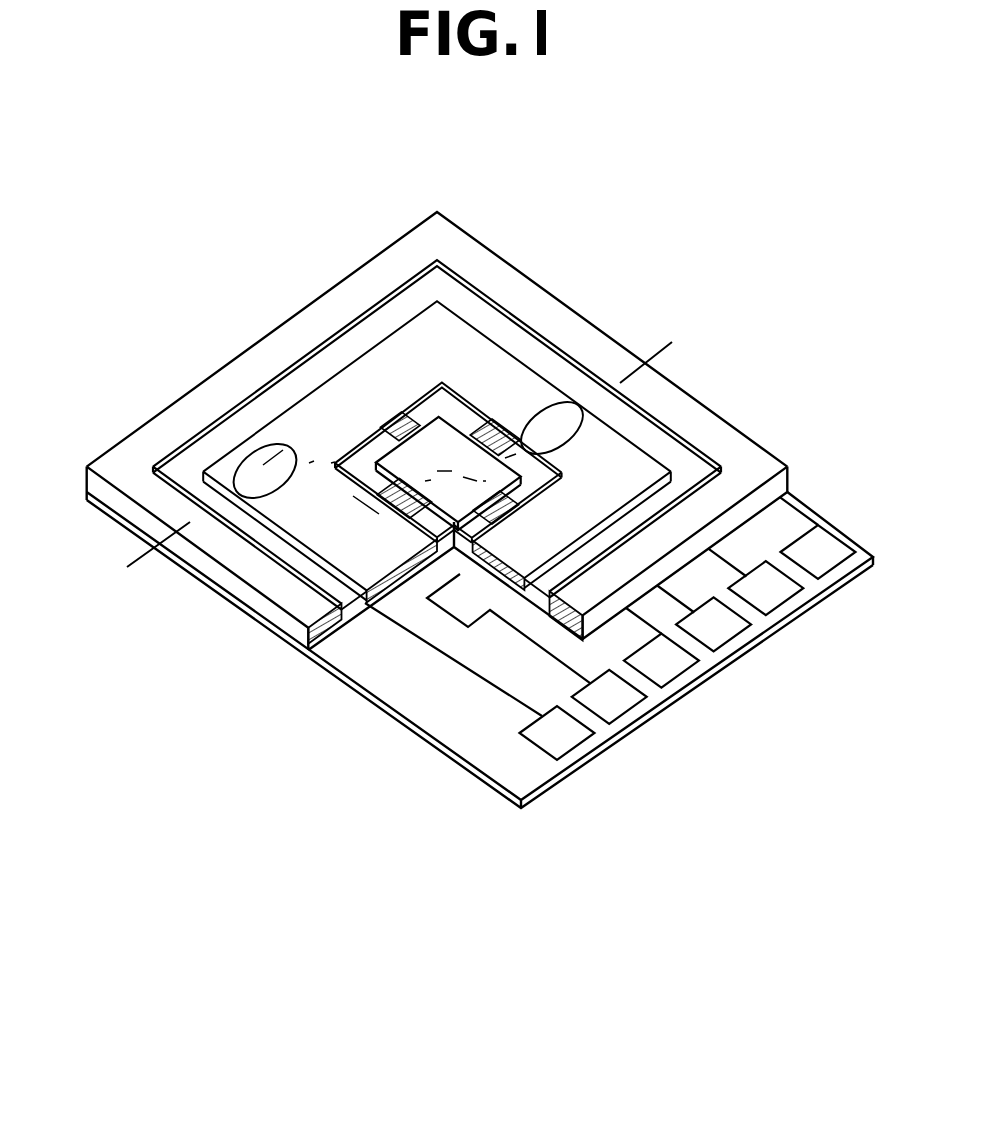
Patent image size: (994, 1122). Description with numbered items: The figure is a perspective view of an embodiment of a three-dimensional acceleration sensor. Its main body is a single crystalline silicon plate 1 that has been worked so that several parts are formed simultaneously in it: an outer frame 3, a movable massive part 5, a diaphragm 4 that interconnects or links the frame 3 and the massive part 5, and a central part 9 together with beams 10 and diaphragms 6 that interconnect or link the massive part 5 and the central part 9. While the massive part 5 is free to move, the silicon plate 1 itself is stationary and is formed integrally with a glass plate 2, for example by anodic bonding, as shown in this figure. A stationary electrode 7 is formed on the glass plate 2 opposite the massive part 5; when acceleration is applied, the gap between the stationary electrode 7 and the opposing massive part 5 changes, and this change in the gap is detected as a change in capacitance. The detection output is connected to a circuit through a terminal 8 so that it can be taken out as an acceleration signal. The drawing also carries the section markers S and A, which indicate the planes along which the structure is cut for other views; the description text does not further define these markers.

The single crystalline silicon plate 1 is at (843, 414).
The glass plate 2 is at (498, 797).
The frame 3 is at (293, 600).
The diaphragm 4 is at (352, 602).
The massive part 5 is at (398, 548).
The diaphragms 6 is at (458, 520).
The stationary electrode 7 is at (475, 602).
The terminal 8 is at (727, 627).
The central part 9 is at (438, 432).
The beams 10 is at (397, 433).
The section line S-S' S is at (552, 405).
The section line A-A' A is at (406, 456).